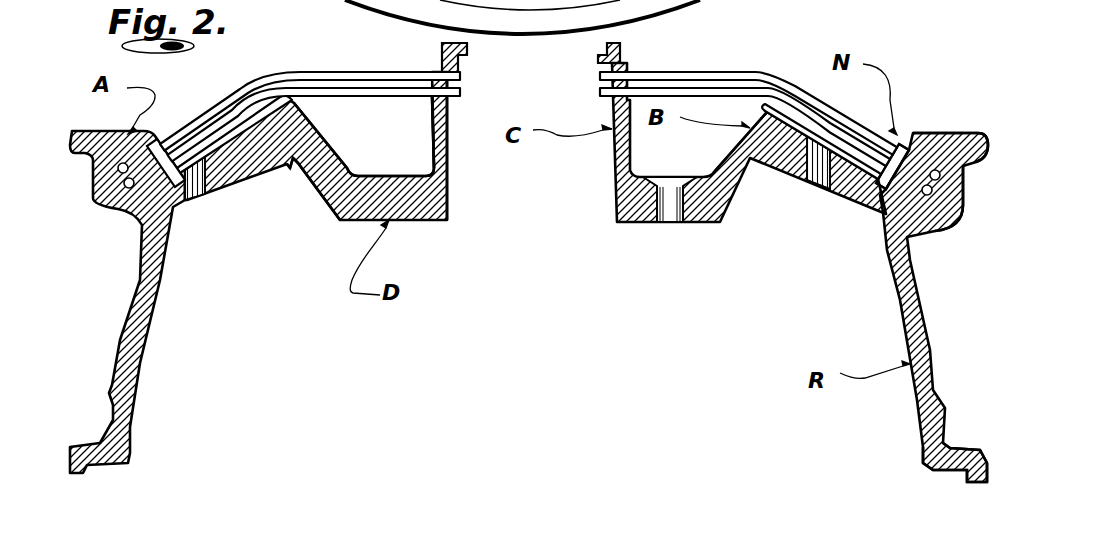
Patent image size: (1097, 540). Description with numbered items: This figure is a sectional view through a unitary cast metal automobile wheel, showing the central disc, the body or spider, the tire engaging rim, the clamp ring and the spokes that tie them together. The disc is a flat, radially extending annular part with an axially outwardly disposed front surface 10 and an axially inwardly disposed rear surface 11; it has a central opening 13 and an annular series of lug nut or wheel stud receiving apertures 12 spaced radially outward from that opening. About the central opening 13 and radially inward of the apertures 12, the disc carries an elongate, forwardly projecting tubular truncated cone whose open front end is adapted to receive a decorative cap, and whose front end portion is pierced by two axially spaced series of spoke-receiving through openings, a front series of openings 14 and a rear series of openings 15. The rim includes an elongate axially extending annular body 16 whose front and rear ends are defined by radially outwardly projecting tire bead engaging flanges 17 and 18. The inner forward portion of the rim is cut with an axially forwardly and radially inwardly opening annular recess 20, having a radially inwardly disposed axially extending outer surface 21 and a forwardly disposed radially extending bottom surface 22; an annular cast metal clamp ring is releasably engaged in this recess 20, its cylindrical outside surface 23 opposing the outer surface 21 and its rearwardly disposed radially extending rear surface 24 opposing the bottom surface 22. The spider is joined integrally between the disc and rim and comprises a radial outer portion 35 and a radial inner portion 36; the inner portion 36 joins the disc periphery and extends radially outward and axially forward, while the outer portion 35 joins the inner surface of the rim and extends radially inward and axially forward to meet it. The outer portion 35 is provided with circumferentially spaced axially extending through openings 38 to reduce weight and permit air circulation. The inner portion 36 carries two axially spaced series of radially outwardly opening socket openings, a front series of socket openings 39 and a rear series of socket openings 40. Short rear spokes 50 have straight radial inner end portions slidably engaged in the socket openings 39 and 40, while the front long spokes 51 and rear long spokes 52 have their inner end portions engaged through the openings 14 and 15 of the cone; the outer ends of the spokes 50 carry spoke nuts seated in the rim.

The front surface 10 is at (393, 172).
The rear surface 11 is at (418, 223).
The wheel stud receiving apertures 12 is at (673, 213).
The central opening 13 is at (447, 190).
The front series of openings 14 is at (460, 74).
The rear series of openings 15 is at (460, 92).
The annular body 16 is at (907, 325).
The front tire bead engaging flange 17 is at (967, 133).
The rear tire bead engaging flange 18 is at (923, 457).
The annular recess 20 is at (923, 133).
The outer surface of recess 21 is at (941, 133).
The bottom surface of recess 22 is at (900, 147).
The outside surface of clamp ring 23 is at (963, 175).
The rear surface of clamp ring 24 is at (177, 210).
The radial outer portion of spider 35 is at (790, 163).
The radial inner portion of spider 36 is at (322, 195).
The through openings 38 is at (208, 188).
The front series of socket openings 39 is at (302, 108).
The rear series of socket openings 40 is at (268, 172).
The short rear spokes 50 is at (843, 180).
The front long spokes 51 is at (730, 38).
The rear long spokes 52 is at (733, 93).